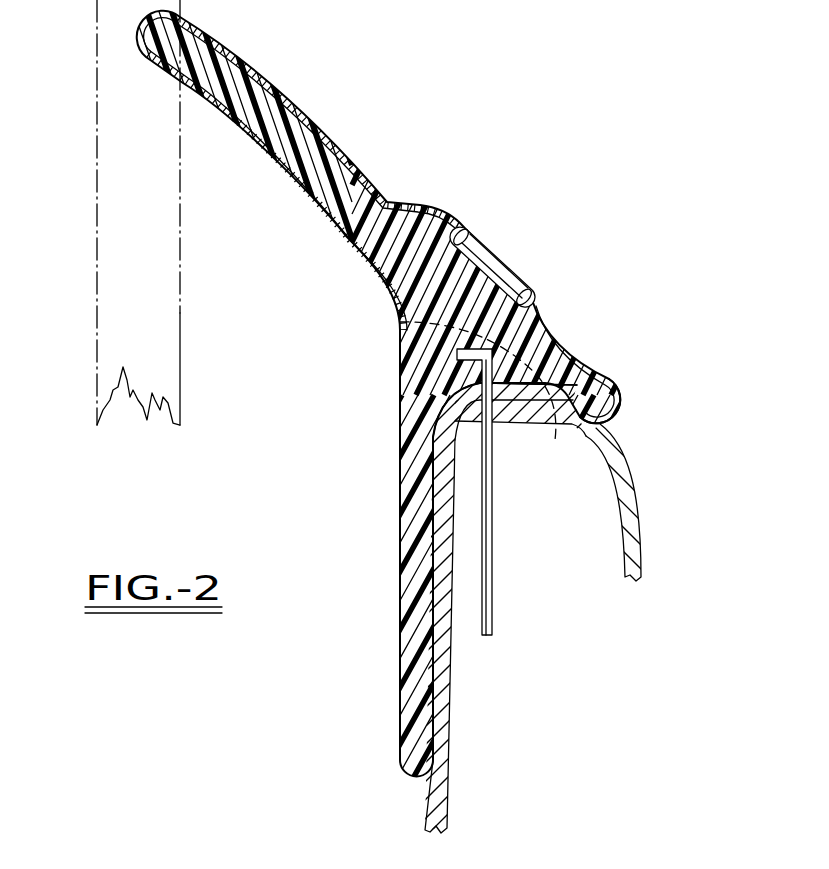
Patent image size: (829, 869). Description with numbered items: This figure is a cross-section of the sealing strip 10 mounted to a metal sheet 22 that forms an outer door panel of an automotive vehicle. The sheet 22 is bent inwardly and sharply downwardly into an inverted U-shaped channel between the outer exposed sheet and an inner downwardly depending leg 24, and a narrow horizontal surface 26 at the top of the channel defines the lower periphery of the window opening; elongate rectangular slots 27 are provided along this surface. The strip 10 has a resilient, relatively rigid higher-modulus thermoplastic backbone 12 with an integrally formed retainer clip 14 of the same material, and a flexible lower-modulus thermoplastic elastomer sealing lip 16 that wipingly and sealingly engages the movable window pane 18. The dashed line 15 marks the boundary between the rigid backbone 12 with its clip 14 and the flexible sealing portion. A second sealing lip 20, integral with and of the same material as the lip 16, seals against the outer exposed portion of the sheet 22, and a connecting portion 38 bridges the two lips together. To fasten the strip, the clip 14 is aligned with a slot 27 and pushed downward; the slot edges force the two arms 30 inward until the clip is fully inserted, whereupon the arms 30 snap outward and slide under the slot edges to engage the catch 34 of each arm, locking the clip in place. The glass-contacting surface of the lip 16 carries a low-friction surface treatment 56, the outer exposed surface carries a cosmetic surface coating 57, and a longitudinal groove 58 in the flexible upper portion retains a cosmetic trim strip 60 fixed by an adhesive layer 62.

The sealing strip 10 is at (533, 187).
The thermoplastic backbone 12 is at (400, 422).
The retainer clip 14 is at (514, 492).
The dashed line 15 is at (403, 349).
The sealing lip 16 is at (260, 87).
The movable window pane 18 is at (180, 328).
The second sealing lip 20 is at (622, 400).
The metal sheet 22 is at (641, 527).
The inner downwardly depending leg 24 is at (445, 783).
The horizontal surface 26 is at (513, 410).
The slot 27 is at (495, 417).
The arm 30 is at (487, 551).
The catch 34 is at (413, 447).
The connecting portion 38 is at (420, 292).
The low-friction surface treatment 56 is at (283, 173).
The cosmetic surface coating 57 is at (314, 133).
The groove 58 is at (522, 280).
The cosmetic trim strip 60 is at (507, 255).
The adhesive layer 62 is at (467, 230).